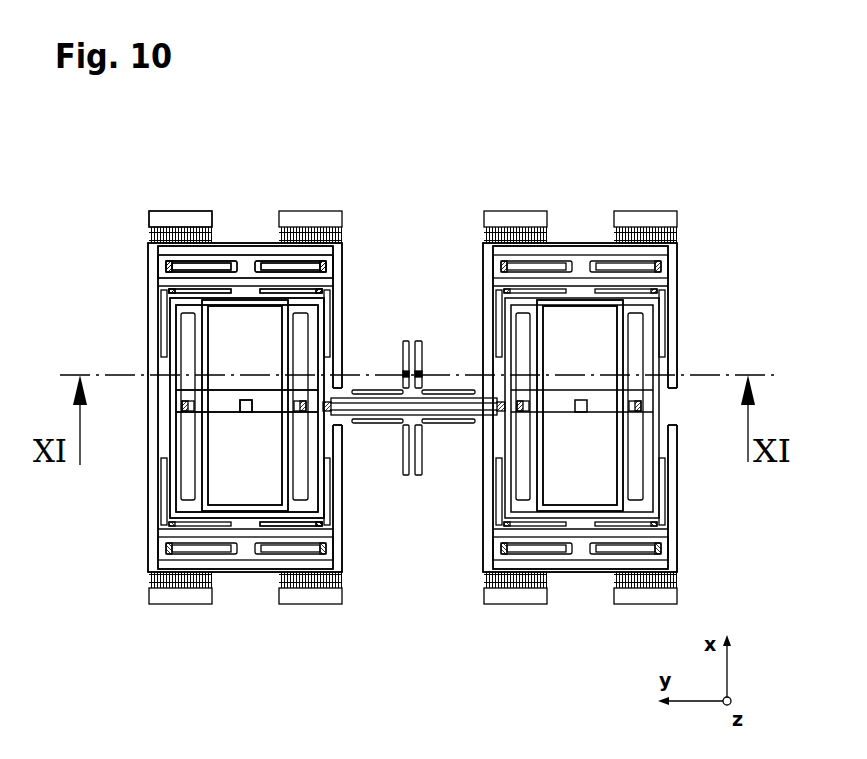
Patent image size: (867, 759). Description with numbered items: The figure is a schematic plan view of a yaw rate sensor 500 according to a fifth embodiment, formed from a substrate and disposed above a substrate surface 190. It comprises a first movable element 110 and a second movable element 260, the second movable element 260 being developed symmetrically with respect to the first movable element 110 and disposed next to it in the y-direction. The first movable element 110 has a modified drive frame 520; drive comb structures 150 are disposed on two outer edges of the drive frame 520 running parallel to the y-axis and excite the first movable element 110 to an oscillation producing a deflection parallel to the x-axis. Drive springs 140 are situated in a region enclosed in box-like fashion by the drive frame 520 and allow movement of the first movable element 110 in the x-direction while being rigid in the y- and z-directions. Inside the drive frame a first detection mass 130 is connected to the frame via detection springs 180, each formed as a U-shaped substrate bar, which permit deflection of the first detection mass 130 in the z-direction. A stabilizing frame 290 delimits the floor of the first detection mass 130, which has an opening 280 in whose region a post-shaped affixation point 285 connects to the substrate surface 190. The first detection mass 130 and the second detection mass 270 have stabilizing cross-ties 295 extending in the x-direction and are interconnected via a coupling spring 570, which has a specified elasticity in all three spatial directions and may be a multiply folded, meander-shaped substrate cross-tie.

The yaw rate sensor 500 is at (100, 222).
The drive comb structures 150 is at (170, 218).
The drive springs 140 is at (232, 262).
The first movable element 110 is at (350, 268).
The substrate surface 190 is at (592, 374).
The second detection mass 270 is at (581, 310).
The second movable element 260 is at (682, 271).
The drive frame 520 is at (338, 283).
The coupling spring 570 is at (421, 341).
The first detection mass 130 is at (193, 300).
The stabilizing frame 290 is at (318, 328).
The stabilizing cross-ties 295 is at (285, 360).
The affixation point 285 is at (240, 407).
The opening 280 is at (245, 414).
The detection springs 180 is at (325, 519).